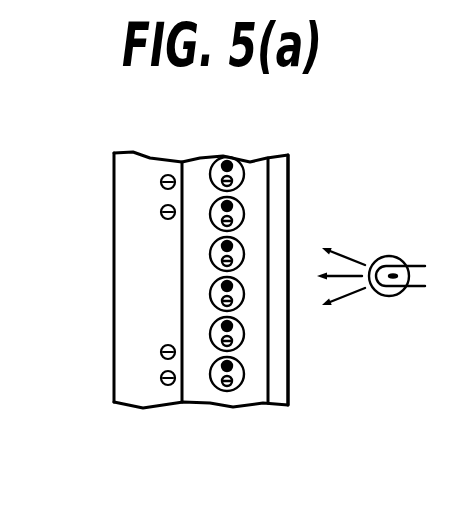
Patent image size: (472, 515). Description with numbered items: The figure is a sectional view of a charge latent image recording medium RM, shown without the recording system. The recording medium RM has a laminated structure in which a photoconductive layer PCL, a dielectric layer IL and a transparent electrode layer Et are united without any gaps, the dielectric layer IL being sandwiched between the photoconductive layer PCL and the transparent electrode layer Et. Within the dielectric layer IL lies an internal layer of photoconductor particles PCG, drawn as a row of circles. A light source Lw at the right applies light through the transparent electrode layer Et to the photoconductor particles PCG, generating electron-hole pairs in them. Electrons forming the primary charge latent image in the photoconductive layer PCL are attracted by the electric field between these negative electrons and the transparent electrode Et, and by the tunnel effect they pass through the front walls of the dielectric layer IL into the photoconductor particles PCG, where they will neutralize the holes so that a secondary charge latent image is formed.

The charge latent image recording medium RM is at (104, 265).
The photoconductive layer PCL is at (138, 168).
The photoconductor particles PCG is at (212, 158).
The dielectric layer IL is at (255, 162).
The transparent electrode layer Et is at (277, 184).
The light source Lw is at (385, 256).